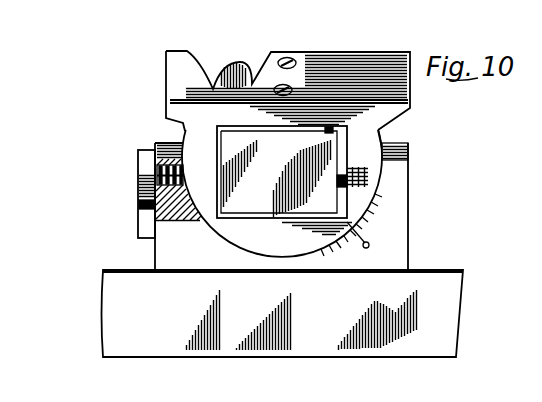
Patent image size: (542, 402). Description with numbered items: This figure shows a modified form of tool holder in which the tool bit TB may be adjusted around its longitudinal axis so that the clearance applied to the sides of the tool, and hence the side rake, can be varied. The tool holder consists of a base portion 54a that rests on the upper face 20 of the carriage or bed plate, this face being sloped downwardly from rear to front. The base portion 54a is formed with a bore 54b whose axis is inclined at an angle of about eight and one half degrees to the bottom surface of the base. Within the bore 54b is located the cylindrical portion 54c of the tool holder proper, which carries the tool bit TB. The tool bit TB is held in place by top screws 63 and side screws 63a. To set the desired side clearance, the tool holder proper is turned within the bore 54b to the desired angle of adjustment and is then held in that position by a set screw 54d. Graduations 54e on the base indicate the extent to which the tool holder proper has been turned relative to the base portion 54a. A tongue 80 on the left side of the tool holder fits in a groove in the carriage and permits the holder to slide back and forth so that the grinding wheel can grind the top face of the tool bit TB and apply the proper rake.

The upper face 20 is at (102, 270).
The base portion 54a is at (398, 234).
The bore 54b is at (366, 200).
The cylindrical portion 54c is at (185, 132).
The set screw 54d is at (157, 170).
The graduations 54e is at (343, 248).
The top screws 63 is at (278, 95).
The side screws 63a is at (345, 165).
The tongue 80 is at (140, 199).
The tool bit TB is at (248, 60).